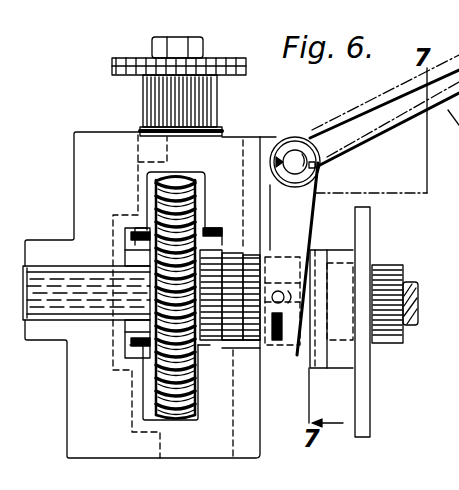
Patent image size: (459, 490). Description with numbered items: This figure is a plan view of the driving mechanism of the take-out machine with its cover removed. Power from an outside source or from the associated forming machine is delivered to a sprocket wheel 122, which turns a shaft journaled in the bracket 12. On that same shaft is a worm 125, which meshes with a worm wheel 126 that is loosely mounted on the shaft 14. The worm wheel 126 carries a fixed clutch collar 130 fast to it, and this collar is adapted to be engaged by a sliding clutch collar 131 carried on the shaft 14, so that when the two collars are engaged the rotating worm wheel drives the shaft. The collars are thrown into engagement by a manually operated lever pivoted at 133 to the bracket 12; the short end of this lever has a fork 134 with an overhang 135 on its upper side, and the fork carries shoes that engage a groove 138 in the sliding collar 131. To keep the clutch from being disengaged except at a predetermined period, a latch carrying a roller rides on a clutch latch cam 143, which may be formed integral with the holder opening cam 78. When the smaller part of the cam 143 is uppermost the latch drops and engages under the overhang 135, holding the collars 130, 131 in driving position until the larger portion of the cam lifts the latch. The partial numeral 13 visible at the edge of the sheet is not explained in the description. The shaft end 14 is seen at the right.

The bracket 12 is at (243, 143).
The shaft 13 is at (241, 293).
The shaft 14 is at (412, 325).
The holder opening cam 78 is at (358, 425).
The sprocket wheel 122 is at (256, 44).
The worm 125 is at (125, 343).
The worm wheel 126 is at (140, 385).
The fixed clutch collar 130 is at (240, 232).
The sliding clutch collar 131 is at (245, 248).
The pivot 133 is at (320, 173).
The fork 134 is at (292, 238).
The overhang 135 is at (291, 346).
The groove 138 is at (274, 352).
The clutch latch cam 143 is at (323, 370).